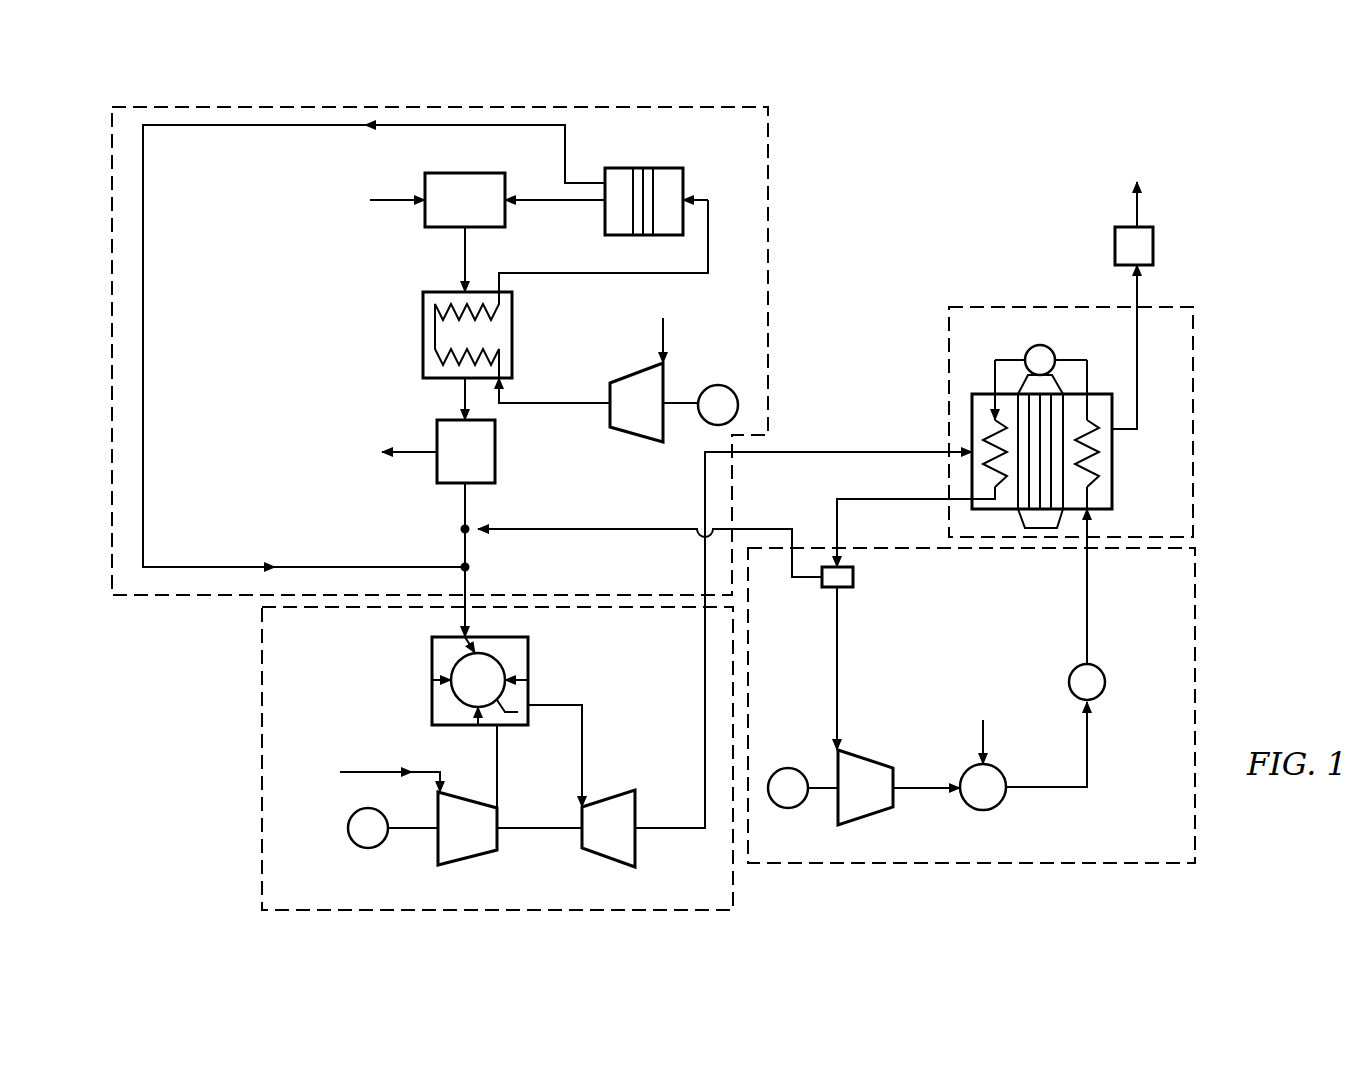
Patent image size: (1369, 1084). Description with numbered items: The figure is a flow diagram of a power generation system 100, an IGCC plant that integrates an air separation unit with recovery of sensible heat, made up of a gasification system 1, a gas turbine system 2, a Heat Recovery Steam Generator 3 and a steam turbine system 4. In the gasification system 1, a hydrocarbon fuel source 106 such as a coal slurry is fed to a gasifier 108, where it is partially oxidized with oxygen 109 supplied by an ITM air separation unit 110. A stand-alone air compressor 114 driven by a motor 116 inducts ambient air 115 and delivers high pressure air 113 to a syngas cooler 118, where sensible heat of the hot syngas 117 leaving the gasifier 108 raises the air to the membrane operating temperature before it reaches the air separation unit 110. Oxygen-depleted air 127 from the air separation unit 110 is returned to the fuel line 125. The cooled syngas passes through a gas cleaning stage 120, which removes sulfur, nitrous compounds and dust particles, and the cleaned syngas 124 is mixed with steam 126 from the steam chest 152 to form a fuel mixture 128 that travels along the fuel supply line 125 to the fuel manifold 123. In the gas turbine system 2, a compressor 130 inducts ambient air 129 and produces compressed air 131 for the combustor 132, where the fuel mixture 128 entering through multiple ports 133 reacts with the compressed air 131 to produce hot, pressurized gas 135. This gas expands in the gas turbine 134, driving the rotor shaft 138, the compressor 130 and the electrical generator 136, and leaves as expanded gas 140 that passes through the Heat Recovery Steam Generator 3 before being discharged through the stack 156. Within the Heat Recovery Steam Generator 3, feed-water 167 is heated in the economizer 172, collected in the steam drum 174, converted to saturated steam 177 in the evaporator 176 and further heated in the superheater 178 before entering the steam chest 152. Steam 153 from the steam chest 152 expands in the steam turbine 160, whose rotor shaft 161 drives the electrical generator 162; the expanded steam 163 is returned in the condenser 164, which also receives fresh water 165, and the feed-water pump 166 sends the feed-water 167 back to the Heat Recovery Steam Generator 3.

The gasification system 1 is at (770, 168).
The gas turbine system 2 is at (262, 680).
The Heat Recovery Steam Generator 3 is at (1195, 363).
The steam turbine system 4 is at (1197, 612).
The power generation system 100 is at (1265, 195).
The hydrocarbon fuel source 106 is at (372, 206).
The gasifier 108 is at (462, 173).
The oxygen 109 is at (542, 212).
The ITM air separation unit 110 is at (658, 168).
The high pressure air 113 is at (573, 283).
The air compressor 114 is at (637, 438).
The ambient air 115 is at (675, 345).
The motor 116 is at (730, 388).
The hot syngas 117 is at (450, 280).
The syngas cooler 118 is at (423, 333).
The gas cleaning stage 120 is at (497, 442).
The fuel manifold 123 is at (432, 652).
The cleaned syngas 124 is at (450, 522).
The fuel supply line 125 is at (462, 549).
The steam 126 is at (598, 520).
The oxygen-depleted air 127 is at (238, 556).
The fuel mixture 128 is at (478, 540).
The ambient air 129 is at (388, 760).
The compressor 130 is at (438, 857).
The compressed air 131 is at (509, 767).
The combustor 132 is at (500, 660).
The ports 133 is at (518, 682).
The gas turbine 134 is at (638, 852).
The hot pressurized gas 135 is at (592, 742).
The electrical generator 136 is at (350, 818).
The rotor shaft 138 is at (530, 830).
The expanded gas 140 is at (693, 748).
The steam chest 152 is at (853, 580).
The steam 153 is at (850, 682).
The stack 156 is at (1156, 245).
The steam turbine 160 is at (862, 822).
The rotor shaft 161 is at (820, 795).
The electrical generator 162 is at (800, 770).
The expanded steam 163 is at (938, 776).
The condenser 164 is at (1000, 808).
The fresh water 165 is at (985, 737).
The feed-water pump 166 is at (1073, 672).
The feed-water 167 is at (1101, 603).
The economizer 172 is at (1100, 448).
The steam drum 174 is at (1048, 348).
The evaporator 176 is at (1018, 495).
The saturated steam 177 is at (1003, 333).
The superheater 178 is at (985, 447).